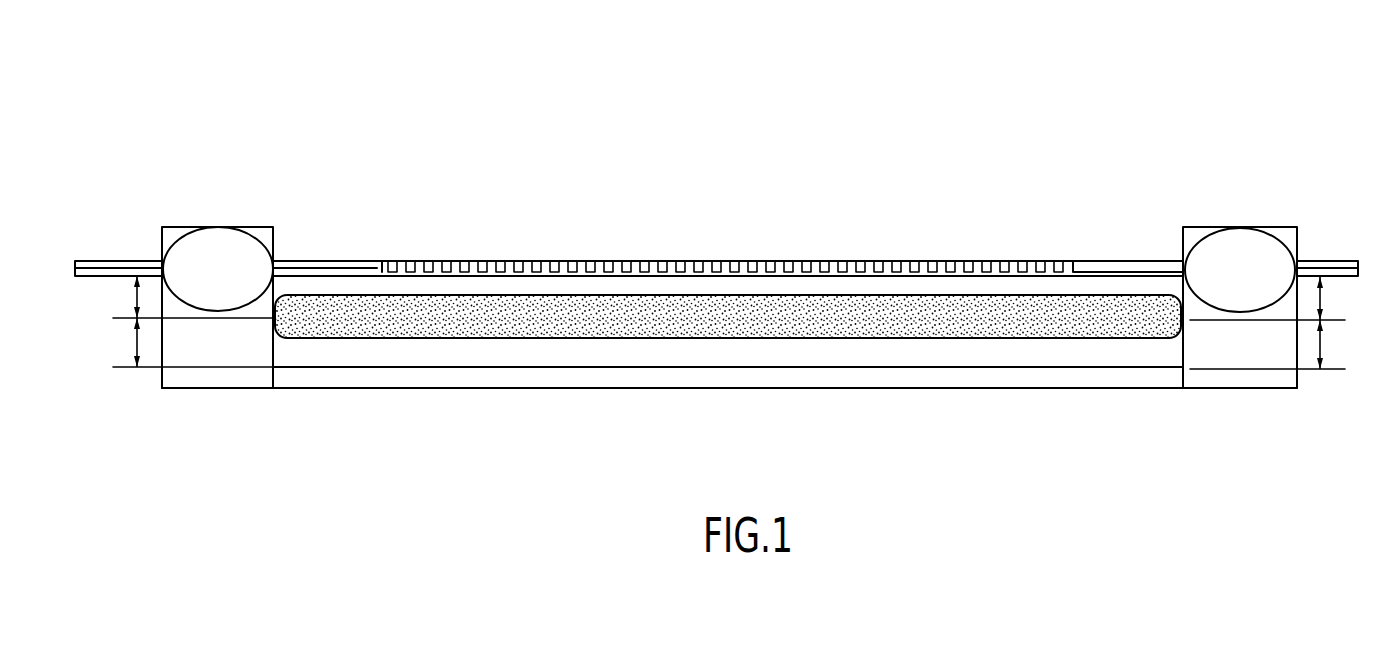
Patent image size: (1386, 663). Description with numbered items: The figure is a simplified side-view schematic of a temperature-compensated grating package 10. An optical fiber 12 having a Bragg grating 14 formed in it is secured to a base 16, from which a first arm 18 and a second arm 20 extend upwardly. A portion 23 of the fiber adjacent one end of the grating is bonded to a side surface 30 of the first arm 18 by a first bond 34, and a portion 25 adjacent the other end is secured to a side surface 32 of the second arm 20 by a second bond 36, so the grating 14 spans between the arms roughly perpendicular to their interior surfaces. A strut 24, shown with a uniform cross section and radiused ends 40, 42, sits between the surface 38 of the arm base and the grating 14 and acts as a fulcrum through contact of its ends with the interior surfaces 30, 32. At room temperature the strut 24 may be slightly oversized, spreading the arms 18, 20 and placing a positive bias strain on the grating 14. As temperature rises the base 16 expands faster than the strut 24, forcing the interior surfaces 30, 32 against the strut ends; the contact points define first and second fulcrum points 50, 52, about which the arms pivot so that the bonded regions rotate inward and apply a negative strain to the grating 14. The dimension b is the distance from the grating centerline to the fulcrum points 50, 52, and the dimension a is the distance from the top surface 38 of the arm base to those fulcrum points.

The temperature-compensated grating package 10 is at (392, 117).
The optical fiber 12 is at (108, 261).
The Bragg grating 14 is at (877, 262).
The base 16 is at (190, 403).
The first arm 18 is at (162, 238).
The second arm 20 is at (1298, 243).
The portion of the fiber 23 is at (323, 261).
The strut 24 is at (622, 338).
The portion of the fiber 25 is at (1112, 263).
The side surface of first arm 30 is at (273, 355).
The side surface of second arm 32 is at (1183, 363).
The first bond 34 is at (205, 253).
The second bond 36 is at (1242, 248).
The surface of the arm base 38 is at (960, 366).
The radiused end 40 is at (285, 279).
The radiused end 42 is at (1178, 297).
The first fulcrum point 50 is at (273, 315).
The second fulcrum point 52 is at (1190, 307).
The distance from bottom of arms to fulcrum points a is at (132, 346).
The distance from grating centerline to fulcrum points b is at (132, 297).